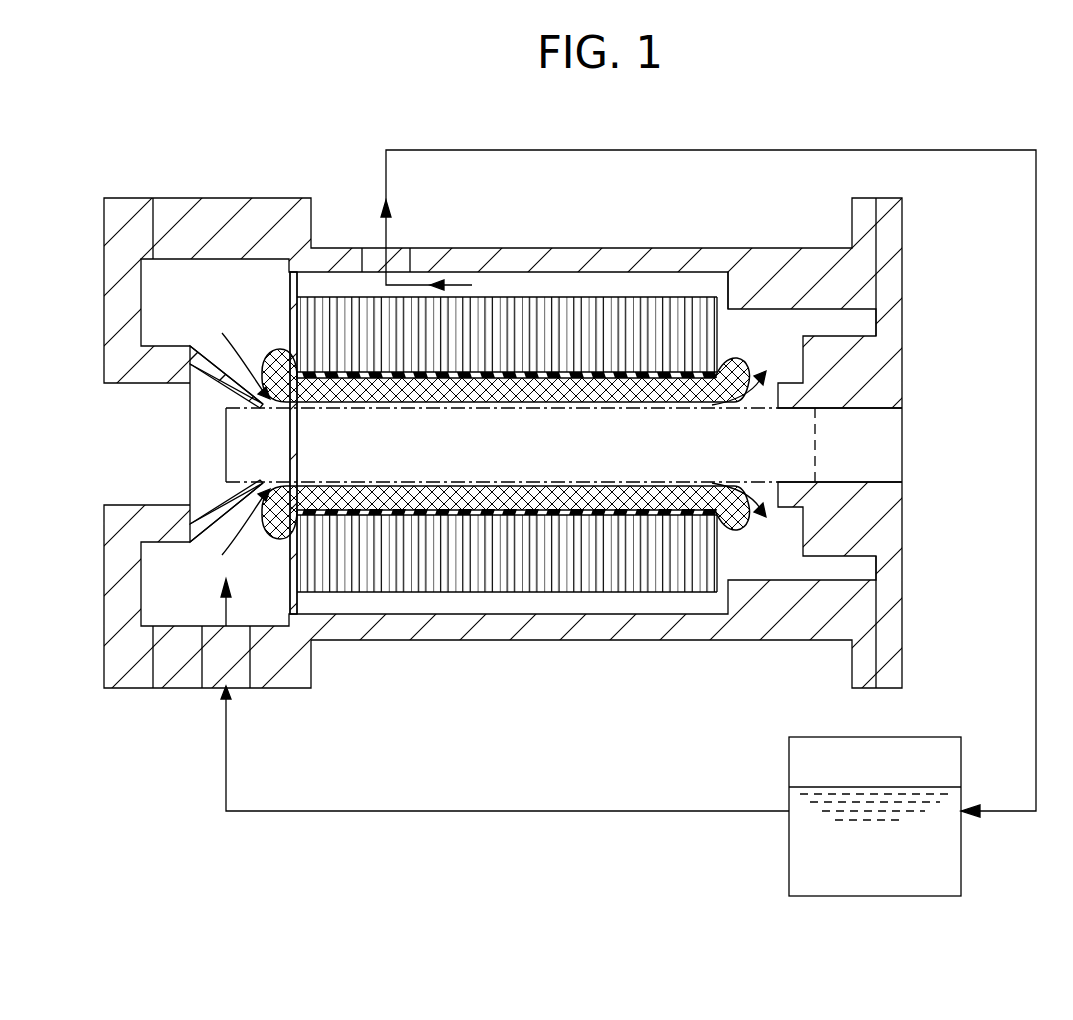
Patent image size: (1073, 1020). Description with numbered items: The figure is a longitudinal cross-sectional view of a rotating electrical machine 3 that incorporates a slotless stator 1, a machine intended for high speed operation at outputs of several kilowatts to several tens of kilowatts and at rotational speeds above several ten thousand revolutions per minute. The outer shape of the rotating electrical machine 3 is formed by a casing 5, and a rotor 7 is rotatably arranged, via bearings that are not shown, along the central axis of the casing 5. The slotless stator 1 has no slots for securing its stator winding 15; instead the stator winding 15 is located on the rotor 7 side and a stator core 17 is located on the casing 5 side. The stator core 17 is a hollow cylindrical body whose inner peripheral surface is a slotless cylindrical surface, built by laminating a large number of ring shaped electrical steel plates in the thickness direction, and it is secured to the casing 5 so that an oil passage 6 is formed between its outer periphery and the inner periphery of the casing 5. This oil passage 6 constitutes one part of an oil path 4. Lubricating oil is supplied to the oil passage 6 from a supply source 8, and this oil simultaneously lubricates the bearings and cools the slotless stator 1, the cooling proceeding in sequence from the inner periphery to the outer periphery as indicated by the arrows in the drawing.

The slotless stator 1 is at (507, 389).
The rotating electrical machine 3 is at (503, 402).
The oil path 4 is at (823, 150).
The casing 5 is at (303, 198).
The oil passage 6 is at (598, 280).
The rotor 7 is at (815, 445).
The supply source 8 is at (955, 866).
The stator winding 15 is at (742, 370).
The stator core 17 is at (676, 297).